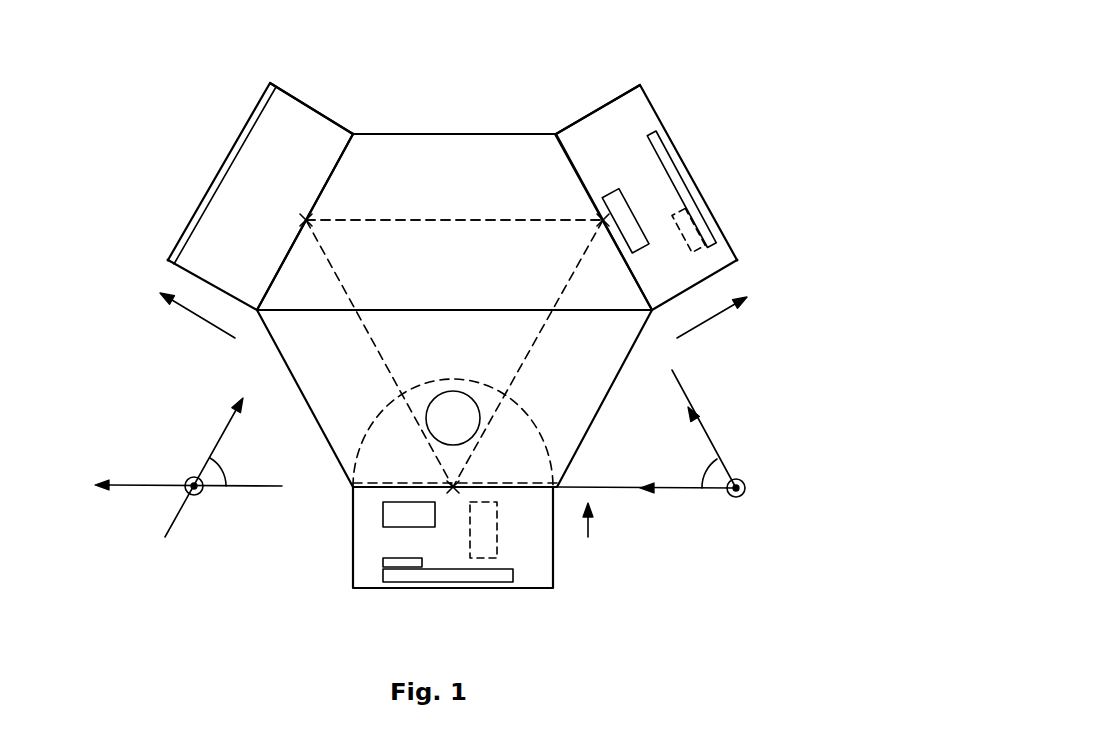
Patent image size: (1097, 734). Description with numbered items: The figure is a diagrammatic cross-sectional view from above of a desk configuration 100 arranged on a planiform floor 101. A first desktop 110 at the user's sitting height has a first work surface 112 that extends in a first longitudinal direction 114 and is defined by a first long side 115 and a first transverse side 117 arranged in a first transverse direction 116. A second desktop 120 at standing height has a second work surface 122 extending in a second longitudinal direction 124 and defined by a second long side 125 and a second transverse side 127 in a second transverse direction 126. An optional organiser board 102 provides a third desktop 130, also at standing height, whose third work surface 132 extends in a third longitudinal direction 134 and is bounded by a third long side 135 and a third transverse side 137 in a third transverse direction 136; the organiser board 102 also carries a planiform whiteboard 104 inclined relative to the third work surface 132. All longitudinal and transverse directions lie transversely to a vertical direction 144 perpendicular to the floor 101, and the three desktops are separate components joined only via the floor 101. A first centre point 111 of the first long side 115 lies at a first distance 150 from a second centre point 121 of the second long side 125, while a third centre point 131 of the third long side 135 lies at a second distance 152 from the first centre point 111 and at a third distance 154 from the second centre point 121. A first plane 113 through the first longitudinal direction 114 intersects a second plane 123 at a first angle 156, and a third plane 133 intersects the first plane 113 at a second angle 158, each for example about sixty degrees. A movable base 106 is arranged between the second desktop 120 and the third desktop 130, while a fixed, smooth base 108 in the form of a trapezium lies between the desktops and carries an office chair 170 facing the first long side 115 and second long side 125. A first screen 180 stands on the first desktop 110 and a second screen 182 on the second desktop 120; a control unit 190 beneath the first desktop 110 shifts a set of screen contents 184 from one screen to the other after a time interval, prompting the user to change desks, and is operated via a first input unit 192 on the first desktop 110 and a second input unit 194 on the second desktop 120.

The desk configuration 100 is at (605, 64).
The floor 101 is at (553, 99).
The organiser board 102 is at (195, 169).
The whiteboard 104 is at (237, 153).
The base 106 is at (456, 199).
The fixed, smooth base 108 is at (479, 347).
The first desktop 110 is at (337, 558).
The first centre point 111 is at (458, 484).
The first work surface 112 is at (414, 552).
The first plane 113 is at (625, 488).
The first longitudinal direction 114 is at (680, 488).
The first long side 115 is at (528, 488).
The first transverse direction 116 is at (588, 527).
The first transverse side 117 is at (553, 580).
The second desktop 120 is at (665, 93).
The second centre point 121 is at (603, 228).
The second work surface 122 is at (622, 159).
The second plane 123 is at (678, 383).
The second longitudinal direction 124 is at (710, 440).
The second long side 125 is at (693, 335).
The second transverse direction 126 is at (733, 318).
The second transverse side 127 is at (737, 258).
The third desktop 130 is at (319, 93).
The third centre point 131 is at (300, 220).
The third work surface 132 is at (316, 169).
The third plane 133 is at (168, 533).
The third longitudinal direction 134 is at (220, 438).
The third long side 135 is at (347, 152).
The third transverse direction 136 is at (205, 322).
The third transverse side 137 is at (183, 272).
The vertical direction 144 is at (747, 497).
The first distance 150 is at (540, 322).
The second distance 152 is at (368, 333).
The third distance 154 is at (492, 223).
The first angle 156 is at (747, 468).
The second angle 158 is at (213, 473).
The office chair 170 is at (473, 429).
The first screen 180 is at (395, 573).
The second screen 182 is at (668, 162).
The set of screen contents 184 is at (693, 208).
The control unit 190 is at (478, 552).
The first input unit 192 is at (402, 518).
The second input unit 194 is at (603, 207).